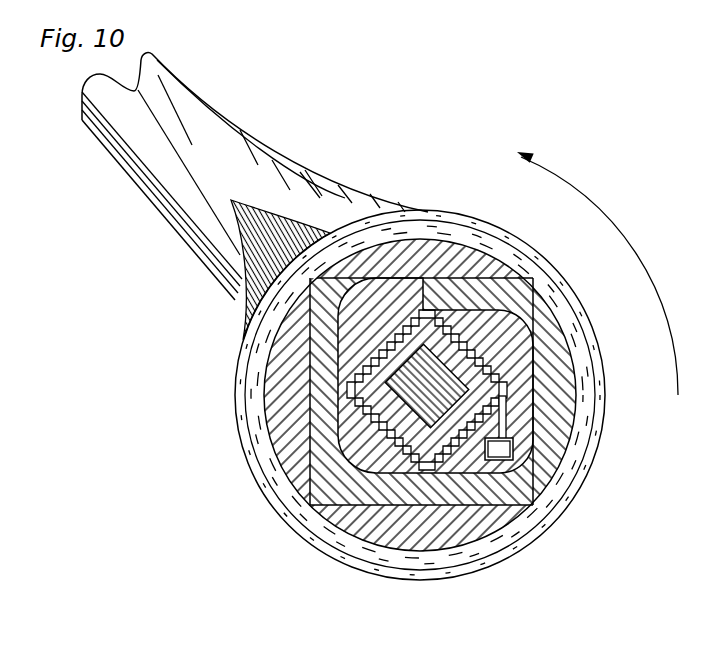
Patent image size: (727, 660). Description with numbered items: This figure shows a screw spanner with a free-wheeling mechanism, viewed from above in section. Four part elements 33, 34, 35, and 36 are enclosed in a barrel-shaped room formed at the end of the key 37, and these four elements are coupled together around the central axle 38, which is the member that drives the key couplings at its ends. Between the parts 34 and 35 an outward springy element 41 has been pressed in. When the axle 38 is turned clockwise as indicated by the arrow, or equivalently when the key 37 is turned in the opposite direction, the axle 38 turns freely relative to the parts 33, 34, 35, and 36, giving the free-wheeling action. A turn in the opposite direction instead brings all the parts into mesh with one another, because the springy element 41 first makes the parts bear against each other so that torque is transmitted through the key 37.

The part element 33 is at (427, 257).
The part element 34 is at (557, 413).
The part element 35 is at (428, 533).
The part element 36 is at (290, 418).
The key 37 is at (193, 173).
The axle 38 is at (450, 368).
The springy element 41 is at (516, 460).